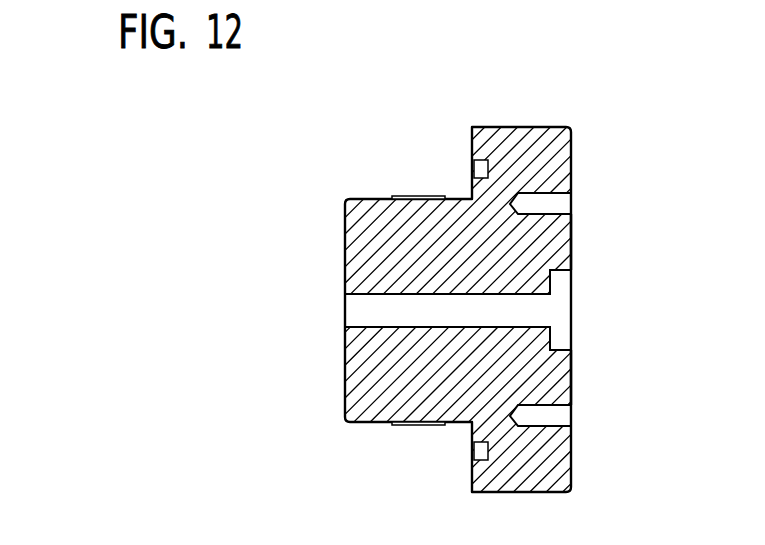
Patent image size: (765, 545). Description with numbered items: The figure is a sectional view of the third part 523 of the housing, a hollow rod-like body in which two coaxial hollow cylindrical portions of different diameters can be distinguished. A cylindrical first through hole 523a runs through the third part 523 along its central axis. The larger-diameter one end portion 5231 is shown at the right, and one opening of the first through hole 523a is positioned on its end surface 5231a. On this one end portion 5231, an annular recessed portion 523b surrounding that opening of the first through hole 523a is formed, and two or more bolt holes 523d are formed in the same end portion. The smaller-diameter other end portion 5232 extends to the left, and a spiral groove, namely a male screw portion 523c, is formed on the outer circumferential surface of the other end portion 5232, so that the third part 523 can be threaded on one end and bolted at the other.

The third part 523 is at (672, 127).
The one end portion 5231 is at (571, 112).
The other end portion 5232 is at (473, 112).
The first through hole 523a is at (383, 325).
The annular recessed portion 523b is at (557, 288).
The male screw portion 523c is at (420, 196).
The bolt holes 523d is at (573, 197).
The end surface 5231a is at (573, 241).